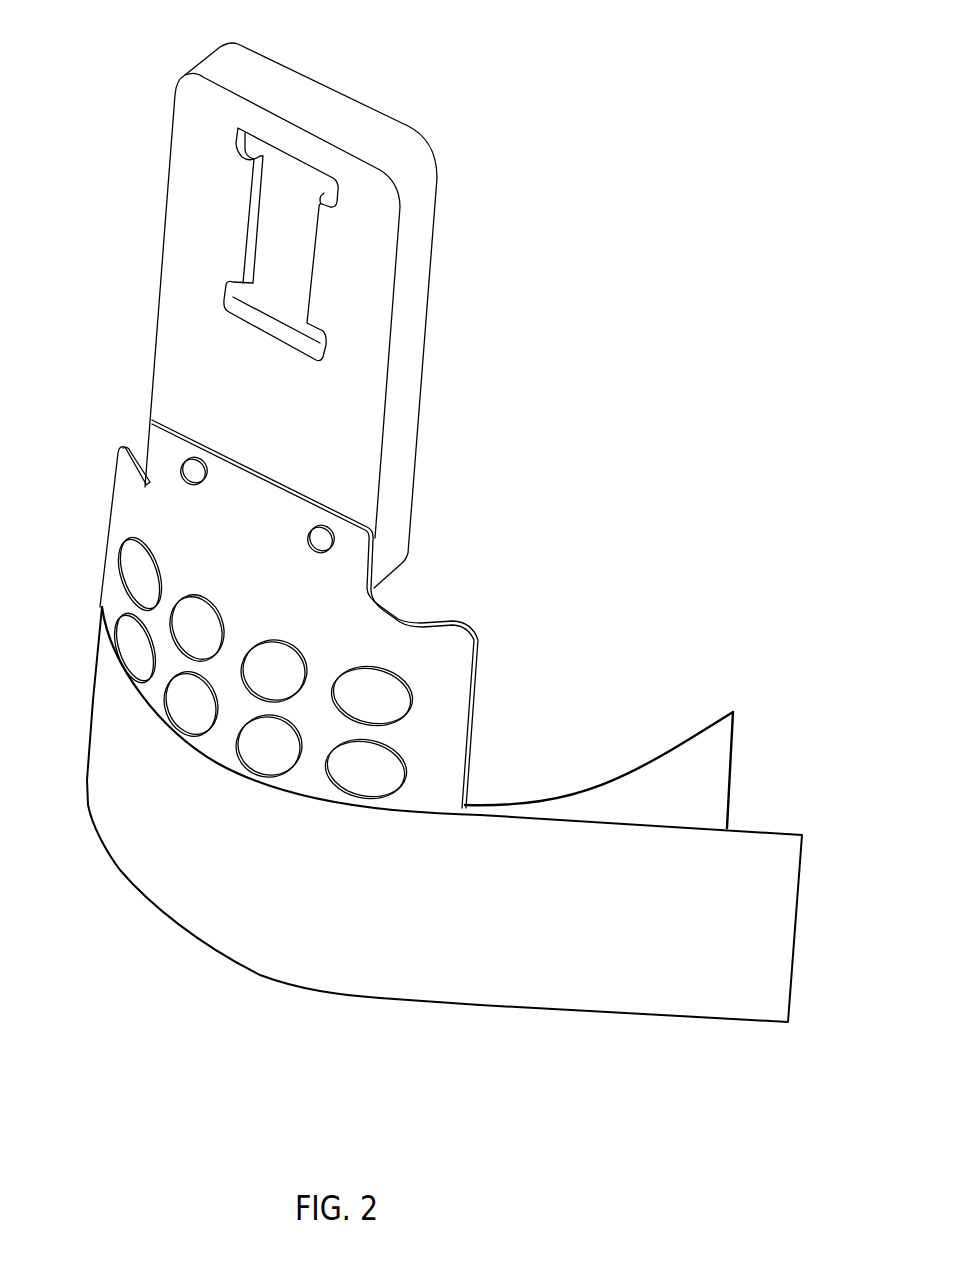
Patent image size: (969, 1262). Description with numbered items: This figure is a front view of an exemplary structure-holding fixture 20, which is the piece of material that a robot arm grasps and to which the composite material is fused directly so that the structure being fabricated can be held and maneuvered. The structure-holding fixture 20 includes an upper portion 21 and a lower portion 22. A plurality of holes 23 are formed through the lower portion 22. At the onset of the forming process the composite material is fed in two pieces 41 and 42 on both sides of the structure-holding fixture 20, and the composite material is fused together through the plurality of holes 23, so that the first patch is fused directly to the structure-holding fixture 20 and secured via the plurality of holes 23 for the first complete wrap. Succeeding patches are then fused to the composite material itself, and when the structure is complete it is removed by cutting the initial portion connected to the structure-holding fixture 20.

The structure-holding fixture 20 is at (484, 532).
The upper portion 21 is at (380, 282).
The lower portion 22 is at (333, 640).
The holes 23 is at (363, 687).
The piece of composite material 41 is at (677, 777).
The piece of composite material 42 is at (723, 902).